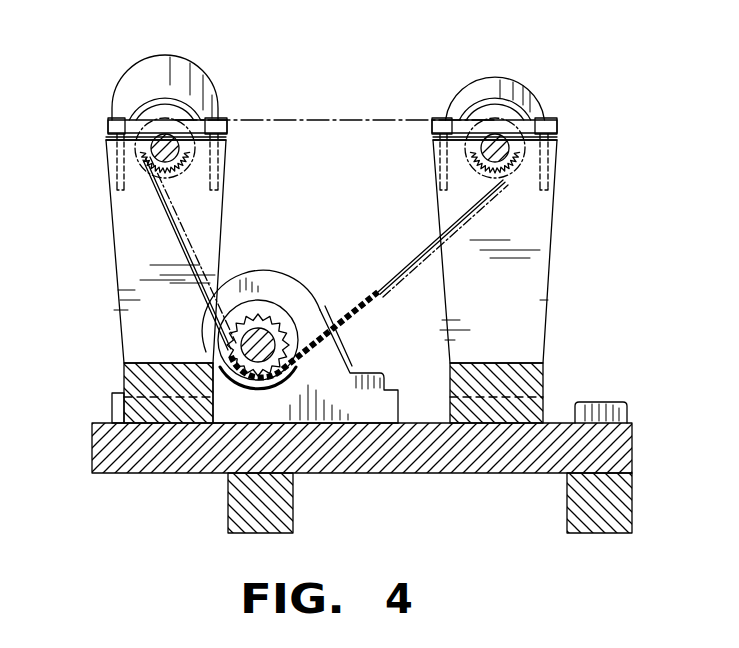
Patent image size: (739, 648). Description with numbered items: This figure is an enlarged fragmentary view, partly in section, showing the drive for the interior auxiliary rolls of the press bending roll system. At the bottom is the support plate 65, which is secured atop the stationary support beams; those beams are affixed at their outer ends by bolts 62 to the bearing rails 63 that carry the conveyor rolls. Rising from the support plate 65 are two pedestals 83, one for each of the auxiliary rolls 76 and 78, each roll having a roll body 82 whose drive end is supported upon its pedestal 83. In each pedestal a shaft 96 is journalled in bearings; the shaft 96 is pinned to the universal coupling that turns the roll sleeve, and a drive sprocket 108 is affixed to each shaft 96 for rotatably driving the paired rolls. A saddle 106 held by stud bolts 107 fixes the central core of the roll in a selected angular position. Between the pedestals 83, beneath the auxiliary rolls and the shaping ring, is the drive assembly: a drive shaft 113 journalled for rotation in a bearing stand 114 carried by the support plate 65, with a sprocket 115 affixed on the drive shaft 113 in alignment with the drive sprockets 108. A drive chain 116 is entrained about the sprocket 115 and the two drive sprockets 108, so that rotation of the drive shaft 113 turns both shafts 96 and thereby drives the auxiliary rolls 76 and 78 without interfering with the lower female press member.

The bolts 62 is at (237, 502).
The bearing rails 63 is at (597, 402).
The support plate 65 is at (100, 457).
The auxiliary roll 76 is at (500, 82).
The auxiliary roll 78 is at (142, 63).
The roll body 82 is at (213, 73).
The pedestal 83 is at (125, 260).
The shaft 96 is at (182, 180).
The saddle 106 is at (108, 142).
The stud bolts 107 is at (117, 172).
The drive sprocket 108 is at (163, 178).
The drive shaft 113 is at (240, 390).
The bearing stands 114 is at (265, 287).
The sprocket 115 is at (282, 325).
The drive chain 116 is at (350, 312).